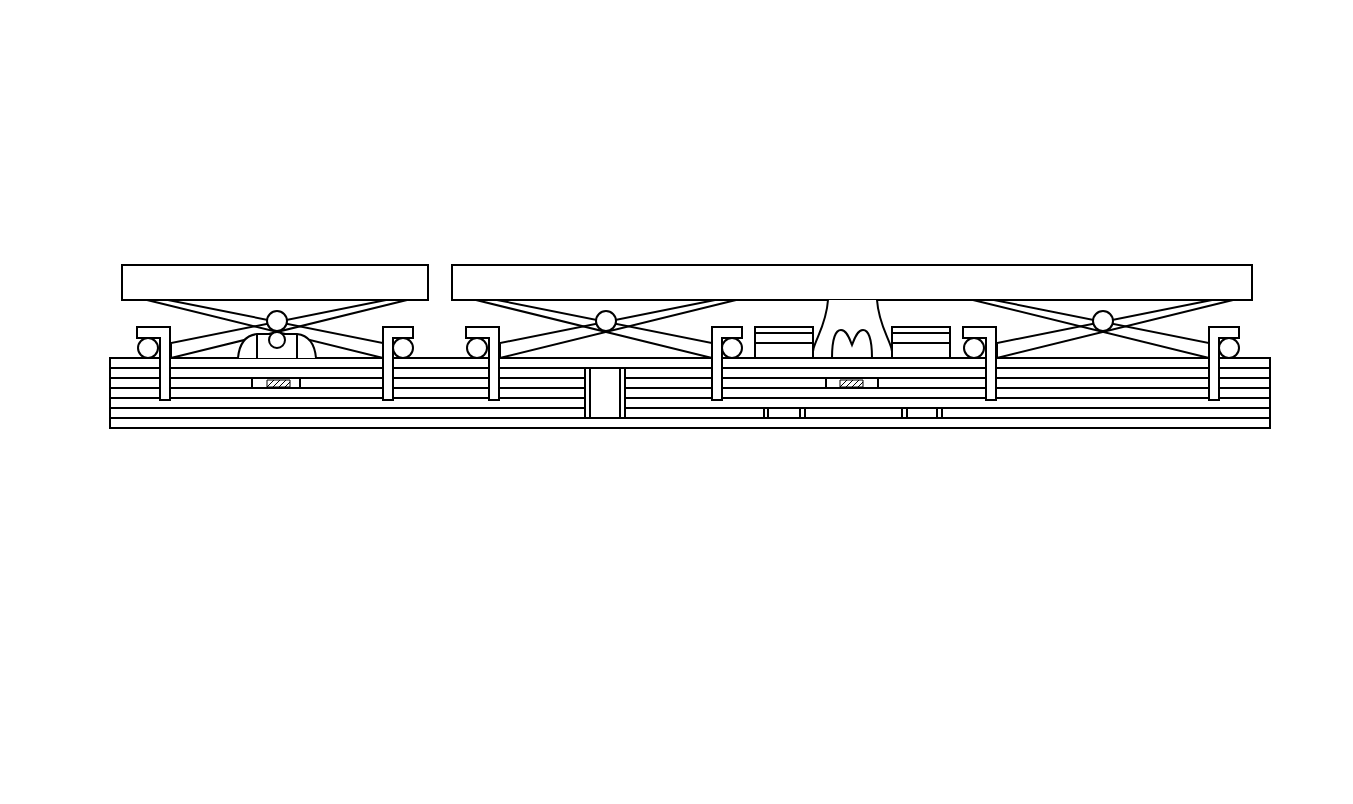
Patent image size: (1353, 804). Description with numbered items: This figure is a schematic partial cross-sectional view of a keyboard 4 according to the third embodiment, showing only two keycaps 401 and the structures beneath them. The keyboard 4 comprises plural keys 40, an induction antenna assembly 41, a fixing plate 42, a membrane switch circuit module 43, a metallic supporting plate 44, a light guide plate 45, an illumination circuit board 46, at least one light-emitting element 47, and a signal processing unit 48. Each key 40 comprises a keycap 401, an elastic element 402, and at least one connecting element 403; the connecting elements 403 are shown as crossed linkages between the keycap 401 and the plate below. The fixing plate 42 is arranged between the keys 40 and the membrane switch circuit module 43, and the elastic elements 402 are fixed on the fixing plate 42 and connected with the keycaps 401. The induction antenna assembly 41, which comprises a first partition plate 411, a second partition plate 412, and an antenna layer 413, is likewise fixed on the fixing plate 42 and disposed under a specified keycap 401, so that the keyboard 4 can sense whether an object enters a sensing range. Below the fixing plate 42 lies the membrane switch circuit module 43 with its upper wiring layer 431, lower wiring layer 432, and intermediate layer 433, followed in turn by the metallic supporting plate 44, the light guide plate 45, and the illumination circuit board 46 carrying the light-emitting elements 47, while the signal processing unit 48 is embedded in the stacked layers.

The keyboard 4 is at (1091, 175).
The keys 40 is at (200, 121).
The keycap 401 is at (1188, 252).
The elastic element 402 is at (851, 313).
The connecting element 403 is at (1045, 312).
The induction antenna assembly 41 is at (651, 292).
The first partition plate 411 is at (316, 205).
The second partition plate 412 is at (774, 332).
The antenna layer 413 is at (770, 338).
The fixing plate 42 is at (1240, 367).
The membrane switch circuit module 43 is at (731, 287).
The upper wiring layer 431 is at (1258, 368).
The lower wiring layer 432 is at (1258, 393).
The intermediate layer 433 is at (1258, 381).
The metallic supporting plate 44 is at (1222, 403).
The light guide plate 45 is at (1177, 415).
The illumination circuit board 46 is at (1132, 425).
The light-emitting element 47 is at (783, 414).
The signal processing unit 48 is at (603, 402).